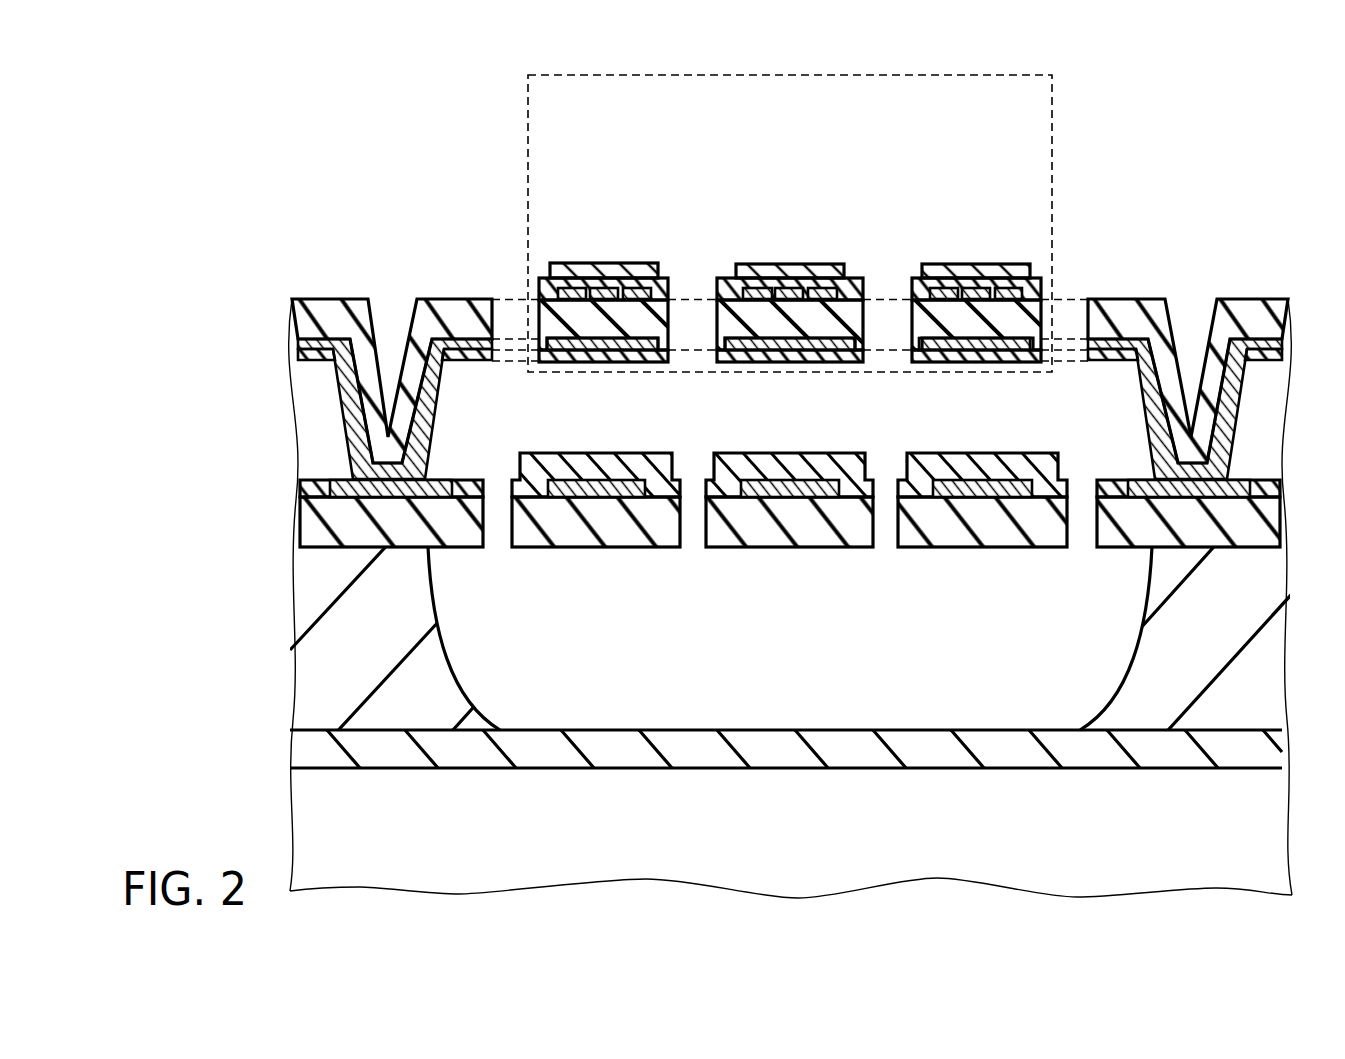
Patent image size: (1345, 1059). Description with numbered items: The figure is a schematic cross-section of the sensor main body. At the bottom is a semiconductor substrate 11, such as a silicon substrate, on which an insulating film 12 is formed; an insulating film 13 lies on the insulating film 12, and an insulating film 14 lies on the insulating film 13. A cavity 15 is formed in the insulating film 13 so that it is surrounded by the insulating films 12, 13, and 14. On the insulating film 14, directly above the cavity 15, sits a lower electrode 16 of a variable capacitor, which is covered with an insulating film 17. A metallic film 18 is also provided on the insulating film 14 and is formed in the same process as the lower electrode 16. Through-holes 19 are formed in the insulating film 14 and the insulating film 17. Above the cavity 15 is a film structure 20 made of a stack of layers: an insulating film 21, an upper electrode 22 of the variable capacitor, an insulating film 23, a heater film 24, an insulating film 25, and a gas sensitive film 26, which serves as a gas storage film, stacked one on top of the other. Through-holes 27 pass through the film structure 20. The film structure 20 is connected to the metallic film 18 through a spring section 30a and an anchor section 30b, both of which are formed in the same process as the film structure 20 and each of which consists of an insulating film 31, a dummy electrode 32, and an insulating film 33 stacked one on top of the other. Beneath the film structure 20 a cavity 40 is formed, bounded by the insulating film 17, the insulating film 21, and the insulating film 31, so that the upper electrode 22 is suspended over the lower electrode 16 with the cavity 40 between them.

The semiconductor substrate 11 is at (1278, 844).
The insulating film 12 is at (1278, 754).
The insulating film 13 is at (1278, 644).
The insulating film 14 is at (303, 525).
The cavity 15 is at (1000, 606).
The lower electrode 16 is at (791, 497).
The insulating film 17 is at (303, 491).
The metallic film 18 is at (337, 484).
The through-holes 19 is at (498, 540).
The film structure 20 is at (795, 73).
The insulating film 21 is at (749, 362).
The upper electrode 22 is at (788, 349).
The insulating film 23 is at (788, 318).
The heater film 24 is at (826, 291).
The insulating film 25 is at (851, 287).
The gas sensitive film 26 is at (749, 268).
The through-holes 27 is at (692, 338).
The spring section 30a is at (507, 328).
The anchor section 30b is at (385, 317).
The insulating film 31 is at (298, 356).
The dummy electrode 32 is at (454, 341).
The insulating film 33 is at (298, 318).
The cavity 40 is at (1000, 411).